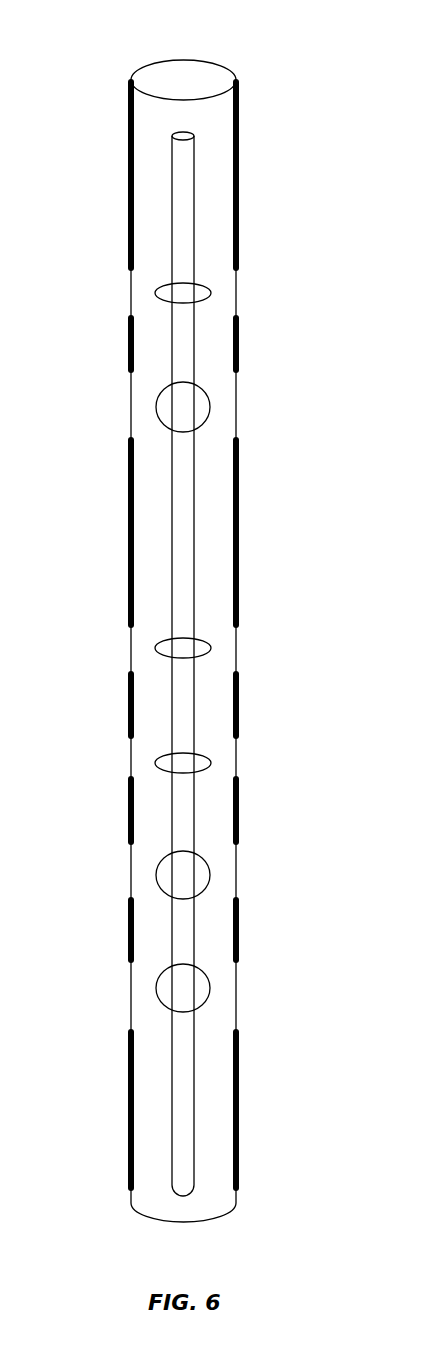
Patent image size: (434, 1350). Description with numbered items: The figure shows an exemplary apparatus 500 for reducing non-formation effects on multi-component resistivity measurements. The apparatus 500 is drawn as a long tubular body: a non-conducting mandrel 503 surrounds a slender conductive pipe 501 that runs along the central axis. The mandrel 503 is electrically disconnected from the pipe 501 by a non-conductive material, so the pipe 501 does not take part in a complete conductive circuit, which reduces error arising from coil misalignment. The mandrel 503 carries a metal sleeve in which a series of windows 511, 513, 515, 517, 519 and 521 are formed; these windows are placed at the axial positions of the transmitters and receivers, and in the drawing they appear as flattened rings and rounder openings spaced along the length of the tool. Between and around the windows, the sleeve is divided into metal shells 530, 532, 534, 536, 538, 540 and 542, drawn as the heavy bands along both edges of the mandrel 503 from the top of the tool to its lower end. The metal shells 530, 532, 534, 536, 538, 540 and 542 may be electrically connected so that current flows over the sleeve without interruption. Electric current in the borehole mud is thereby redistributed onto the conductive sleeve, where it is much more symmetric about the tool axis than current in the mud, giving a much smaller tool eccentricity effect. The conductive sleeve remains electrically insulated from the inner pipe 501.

The apparatus 500 is at (264, 41).
The conductive pipe 501 is at (195, 201).
The non-conducting mandrel 503 is at (239, 136).
The window 511 is at (238, 293).
The window 513 is at (238, 406).
The window 515 is at (238, 645).
The window 517 is at (238, 760).
The window 519 is at (238, 870).
The window 521 is at (238, 995).
The metal shell 530 is at (129, 137).
The metal shell 532 is at (129, 345).
The metal shell 534 is at (129, 540).
The metal shell 536 is at (129, 702).
The metal shell 538 is at (129, 812).
The metal shell 540 is at (129, 930).
The metal shell 542 is at (129, 1107).